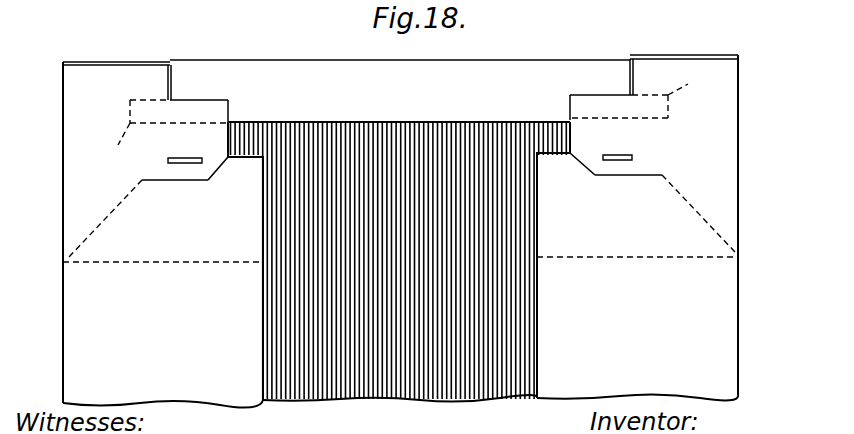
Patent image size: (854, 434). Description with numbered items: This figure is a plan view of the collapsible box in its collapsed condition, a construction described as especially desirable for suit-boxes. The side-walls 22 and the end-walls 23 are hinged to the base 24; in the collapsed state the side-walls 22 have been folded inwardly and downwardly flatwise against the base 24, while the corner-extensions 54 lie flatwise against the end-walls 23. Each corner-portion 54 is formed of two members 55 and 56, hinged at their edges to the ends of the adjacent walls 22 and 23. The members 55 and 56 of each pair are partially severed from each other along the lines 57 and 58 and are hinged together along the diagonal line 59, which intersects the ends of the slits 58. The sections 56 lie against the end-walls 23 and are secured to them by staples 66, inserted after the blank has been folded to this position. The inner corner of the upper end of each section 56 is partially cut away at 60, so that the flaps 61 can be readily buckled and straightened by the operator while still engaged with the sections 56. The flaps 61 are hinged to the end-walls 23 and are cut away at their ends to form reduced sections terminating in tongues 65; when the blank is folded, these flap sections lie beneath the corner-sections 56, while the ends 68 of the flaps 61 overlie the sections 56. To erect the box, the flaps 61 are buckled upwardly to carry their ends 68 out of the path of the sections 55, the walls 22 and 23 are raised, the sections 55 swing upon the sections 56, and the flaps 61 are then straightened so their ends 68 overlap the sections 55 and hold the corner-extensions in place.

The side-wall 22 is at (400, 344).
The end-wall 23 is at (395, 145).
The base 24 is at (425, 378).
The corner-portion 54 is at (401, 229).
The corner-section member 55 is at (400, 248).
The corner-section member 56 is at (75, 183).
The severing line 57 is at (218, 168).
The slit 58 is at (170, 183).
The diagonal line 59 is at (112, 217).
The cut-away portion 60 is at (172, 98).
The flap 61 is at (488, 72).
The tongue 65 is at (406, 121).
The staple 66 is at (186, 158).
The flap end 68 is at (112, 62).